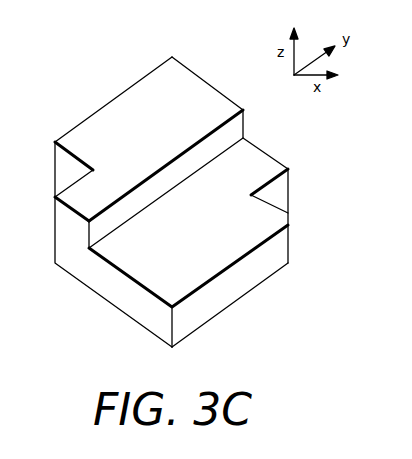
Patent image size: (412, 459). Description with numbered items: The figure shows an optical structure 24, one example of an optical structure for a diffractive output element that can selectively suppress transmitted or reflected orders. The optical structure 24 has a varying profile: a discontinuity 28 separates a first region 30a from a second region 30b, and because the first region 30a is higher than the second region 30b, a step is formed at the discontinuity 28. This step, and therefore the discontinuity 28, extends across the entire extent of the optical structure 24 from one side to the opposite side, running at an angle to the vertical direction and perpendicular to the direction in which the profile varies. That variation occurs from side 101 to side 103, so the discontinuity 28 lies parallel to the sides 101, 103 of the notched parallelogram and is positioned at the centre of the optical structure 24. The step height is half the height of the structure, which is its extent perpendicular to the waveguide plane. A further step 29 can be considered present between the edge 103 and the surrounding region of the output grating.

The side 101 is at (134, 88).
The optical structure 24 is at (183, 74).
The first region 30a is at (94, 124).
The discontinuity 28 is at (239, 123).
The second region 30b is at (140, 261).
The further step 29 is at (261, 267).
The side 103 is at (245, 296).